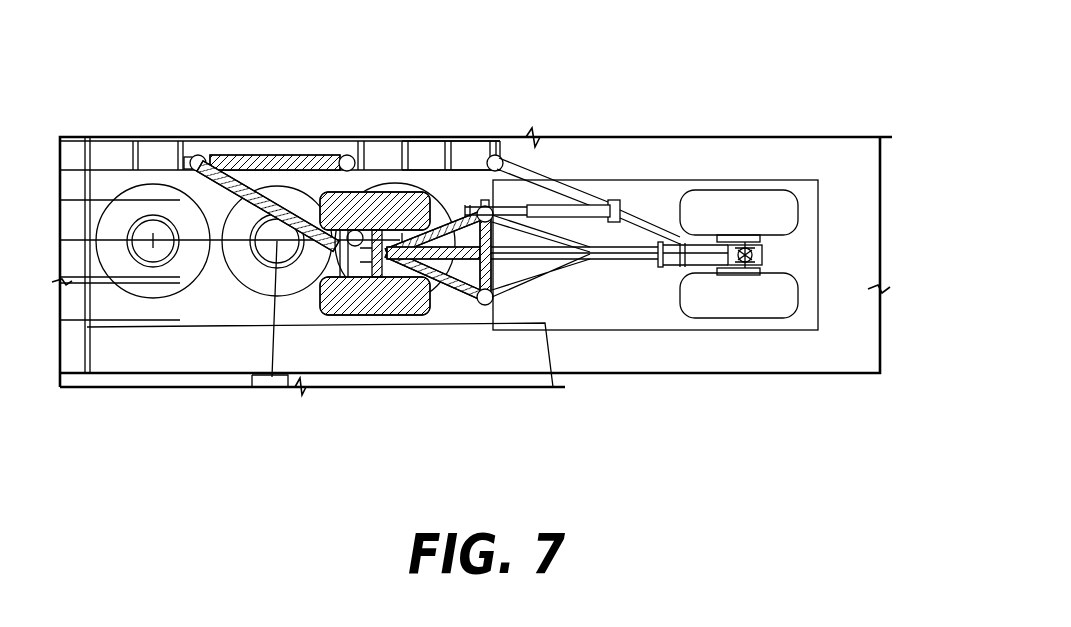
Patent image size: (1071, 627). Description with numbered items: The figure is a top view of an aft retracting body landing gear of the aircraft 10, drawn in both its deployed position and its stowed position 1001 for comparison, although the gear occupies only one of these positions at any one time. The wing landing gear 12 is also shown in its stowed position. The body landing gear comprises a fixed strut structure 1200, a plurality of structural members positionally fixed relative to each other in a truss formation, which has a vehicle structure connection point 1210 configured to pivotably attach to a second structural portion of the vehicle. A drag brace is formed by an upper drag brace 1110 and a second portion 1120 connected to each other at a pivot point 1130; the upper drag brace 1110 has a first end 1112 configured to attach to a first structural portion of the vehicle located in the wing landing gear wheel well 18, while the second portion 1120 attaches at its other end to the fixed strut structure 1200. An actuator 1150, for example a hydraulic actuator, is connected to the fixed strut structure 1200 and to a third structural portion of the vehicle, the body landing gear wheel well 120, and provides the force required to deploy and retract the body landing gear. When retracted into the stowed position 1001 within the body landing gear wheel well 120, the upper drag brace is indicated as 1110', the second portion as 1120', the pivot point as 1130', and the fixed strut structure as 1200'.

The aircraft 10 is at (813, 108).
The wing landing gear 12 is at (190, 222).
The wing landing gear wheel well 18 is at (107, 303).
The body landing gear wheel well 120 is at (795, 250).
The stowed position 1001 is at (778, 210).
The upper drag brace 1110 is at (280, 105).
The stowed position of the upper drag brace 1110' is at (451, 105).
The first end 1112 is at (348, 155).
The second portion 1120 is at (268, 163).
The stowed position of the second portion 1120' is at (588, 157).
The pivot point 1130 is at (200, 103).
The stowed position of the pivot point 1130' is at (512, 106).
The actuator 1150 is at (600, 213).
The fixed strut structure 1200 is at (403, 319).
The stowed position of the fixed strut structure 1200' is at (582, 337).
The vehicle structure connection point 1210 is at (490, 253).